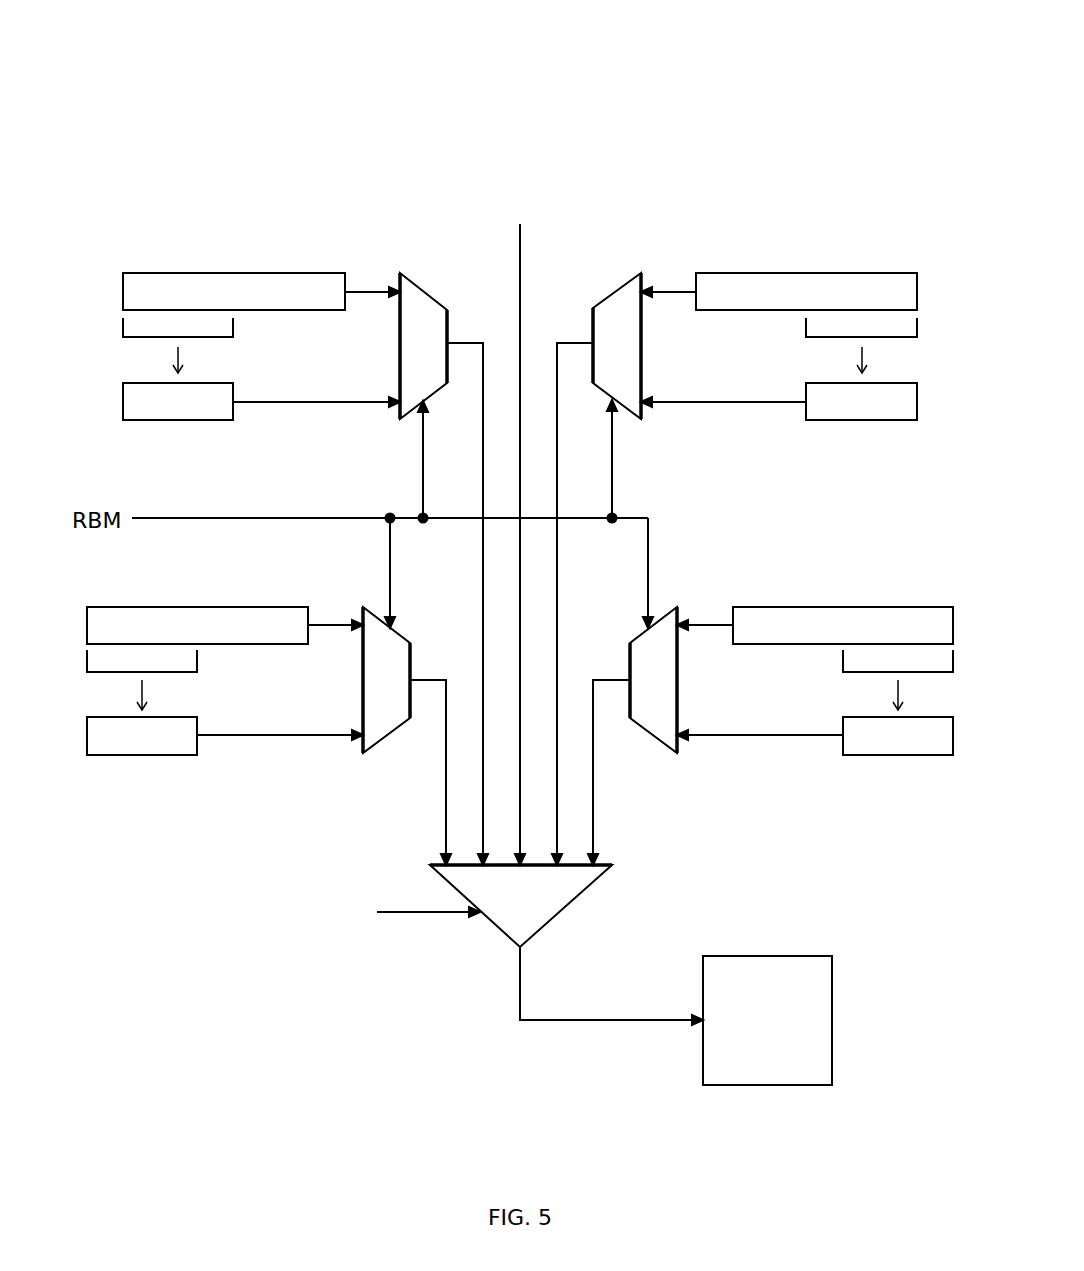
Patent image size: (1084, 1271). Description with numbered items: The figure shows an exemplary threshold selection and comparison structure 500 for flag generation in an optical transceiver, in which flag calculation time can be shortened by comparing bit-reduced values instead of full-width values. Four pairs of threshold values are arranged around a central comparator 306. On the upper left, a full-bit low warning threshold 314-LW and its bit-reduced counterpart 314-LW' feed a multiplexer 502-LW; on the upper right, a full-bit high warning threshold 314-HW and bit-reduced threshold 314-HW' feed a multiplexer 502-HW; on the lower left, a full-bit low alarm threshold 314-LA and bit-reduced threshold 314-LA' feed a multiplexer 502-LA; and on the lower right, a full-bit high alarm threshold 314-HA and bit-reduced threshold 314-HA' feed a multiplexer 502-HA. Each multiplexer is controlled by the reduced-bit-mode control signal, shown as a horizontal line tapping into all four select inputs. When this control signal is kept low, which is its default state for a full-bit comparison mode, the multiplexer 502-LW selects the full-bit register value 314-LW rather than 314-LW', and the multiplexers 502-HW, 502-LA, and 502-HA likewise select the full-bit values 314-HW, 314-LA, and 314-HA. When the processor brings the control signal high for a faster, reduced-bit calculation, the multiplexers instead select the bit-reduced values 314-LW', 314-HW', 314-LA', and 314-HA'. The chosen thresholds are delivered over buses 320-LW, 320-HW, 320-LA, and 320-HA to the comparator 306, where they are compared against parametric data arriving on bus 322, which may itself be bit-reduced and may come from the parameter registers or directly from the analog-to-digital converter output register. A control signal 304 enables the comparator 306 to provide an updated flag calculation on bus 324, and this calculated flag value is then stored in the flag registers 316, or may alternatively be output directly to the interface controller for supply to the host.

The threshold selection and comparison structure 500 is at (170, 40).
The bus 322 is at (520, 531).
The full-bit low warning threshold register value 314-LW is at (261, 291).
The bit-reduced low warning threshold register value 314-LW' is at (261, 401).
The low warning multiplexer 502-LW is at (423, 395).
The low warning threshold bus 320-LW is at (465, 343).
The full-bit high warning threshold register value 314-HW is at (779, 291).
The bit-reduced high warning threshold register value 314-HW' is at (779, 401).
The high warning multiplexer 502-HW is at (617, 395).
The high warning threshold bus 320-HW is at (563, 343).
The full-bit low alarm threshold register value 314-LA is at (225, 625).
The bit-reduced low alarm threshold register value 314-LA' is at (225, 736).
The low alarm multiplexer 502-LA is at (386, 680).
The low alarm threshold bus 320-LA is at (446, 822).
The full-bit high alarm threshold register value 314-HA is at (815, 625).
The bit-reduced high alarm threshold register value 314-HA' is at (815, 736).
The high alarm multiplexer 502-HA is at (653, 680).
The high alarm threshold bus 320-HA is at (593, 818).
The comparator 306 is at (500, 904).
The control signal 304 is at (405, 912).
The bus 324 is at (520, 967).
The flag registers 316 is at (747, 1062).